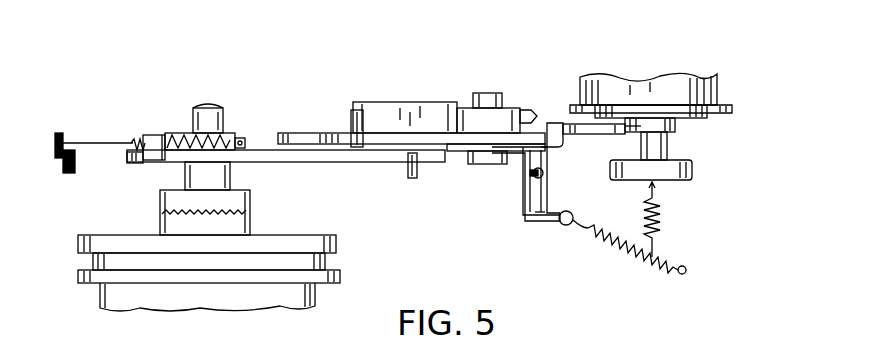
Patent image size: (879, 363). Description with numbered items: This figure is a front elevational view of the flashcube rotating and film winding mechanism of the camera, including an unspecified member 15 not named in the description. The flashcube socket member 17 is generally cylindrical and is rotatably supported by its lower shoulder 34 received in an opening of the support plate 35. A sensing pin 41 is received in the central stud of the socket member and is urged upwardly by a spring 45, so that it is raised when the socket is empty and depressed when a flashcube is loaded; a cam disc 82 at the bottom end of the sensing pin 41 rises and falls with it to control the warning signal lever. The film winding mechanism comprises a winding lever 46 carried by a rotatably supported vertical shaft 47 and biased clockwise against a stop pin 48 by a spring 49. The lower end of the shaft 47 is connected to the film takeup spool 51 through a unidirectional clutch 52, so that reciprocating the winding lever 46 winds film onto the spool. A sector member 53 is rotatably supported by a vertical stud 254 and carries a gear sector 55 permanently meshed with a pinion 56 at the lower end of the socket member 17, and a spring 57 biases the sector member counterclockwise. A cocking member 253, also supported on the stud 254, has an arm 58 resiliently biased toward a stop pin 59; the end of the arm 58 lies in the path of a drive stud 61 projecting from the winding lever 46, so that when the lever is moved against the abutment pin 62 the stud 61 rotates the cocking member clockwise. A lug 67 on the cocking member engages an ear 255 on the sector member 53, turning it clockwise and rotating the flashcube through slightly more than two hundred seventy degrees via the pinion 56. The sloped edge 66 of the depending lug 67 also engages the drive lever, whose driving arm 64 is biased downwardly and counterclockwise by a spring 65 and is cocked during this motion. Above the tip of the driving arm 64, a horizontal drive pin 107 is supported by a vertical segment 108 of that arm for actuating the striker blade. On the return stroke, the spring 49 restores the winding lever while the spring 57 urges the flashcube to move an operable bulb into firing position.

The carriage block 15 is at (400, 110).
The flashcube socket member 17 is at (712, 85).
The lower shoulder 34 is at (640, 108).
The support plate 35 is at (728, 108).
The sensing pin 41 is at (665, 146).
The spring 45 is at (660, 218).
The winding lever 46 is at (366, 152).
The vertical shaft 47 is at (208, 112).
The stop pin 48 is at (420, 180).
The spring 49 is at (136, 145).
The film takeup spool 51 is at (93, 265).
The unidirectional clutch 52 is at (245, 222).
The sector member 53 is at (570, 124).
The gear sector 55 is at (630, 126).
The pinion 56 is at (675, 122).
The spring 57 is at (530, 110).
The arm 58 is at (292, 138).
The stop pin 59 is at (355, 120).
The drive stud 61 is at (154, 140).
The abutment pin 62 is at (72, 160).
The driving arm 64 is at (545, 221).
The spring 65 is at (640, 252).
The sloped edge 66 is at (546, 141).
The lug 67 is at (555, 123).
The cam disc 82 is at (675, 178).
The horizontal drive pin 107 is at (533, 170).
The vertical segment 108 is at (540, 213).
The cocking member 253 is at (393, 140).
The vertical stud 254 is at (493, 72).
The ear 255 is at (520, 165).